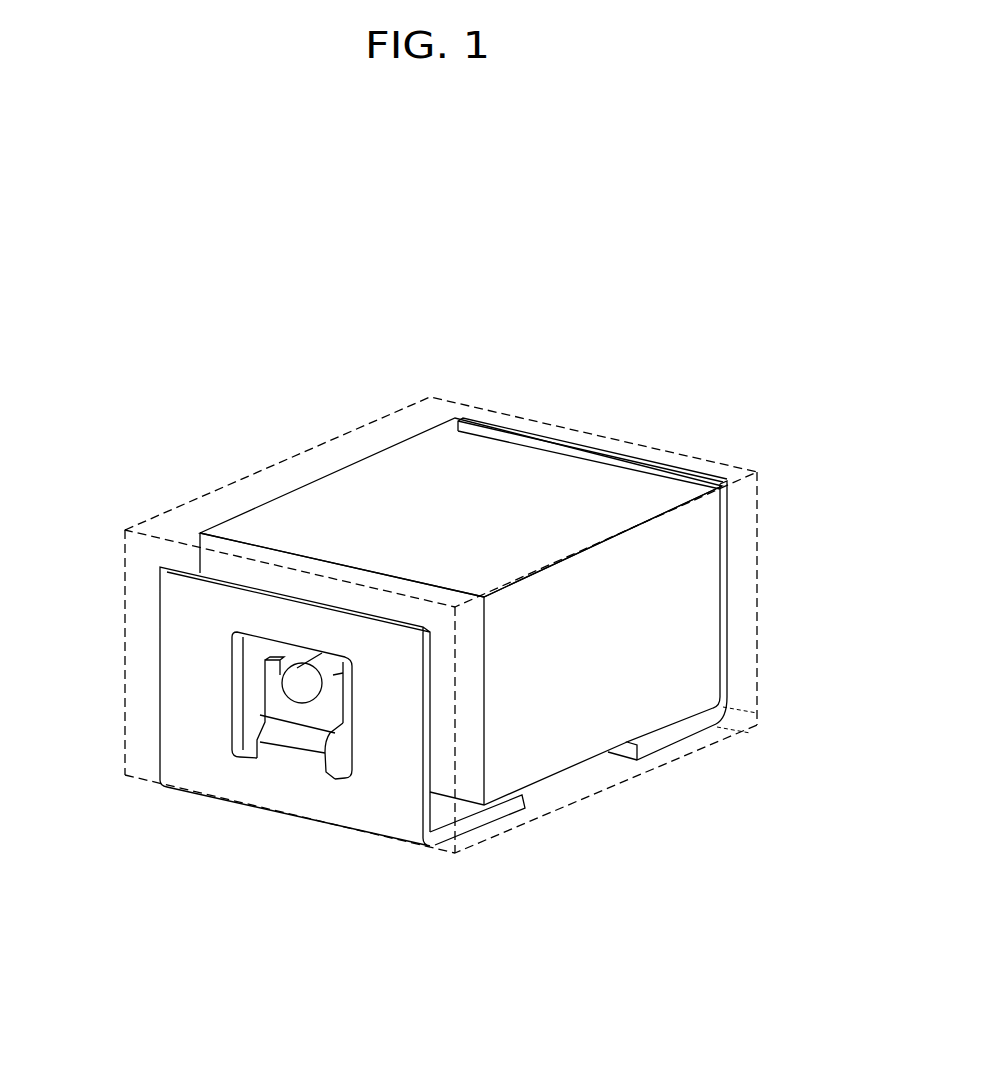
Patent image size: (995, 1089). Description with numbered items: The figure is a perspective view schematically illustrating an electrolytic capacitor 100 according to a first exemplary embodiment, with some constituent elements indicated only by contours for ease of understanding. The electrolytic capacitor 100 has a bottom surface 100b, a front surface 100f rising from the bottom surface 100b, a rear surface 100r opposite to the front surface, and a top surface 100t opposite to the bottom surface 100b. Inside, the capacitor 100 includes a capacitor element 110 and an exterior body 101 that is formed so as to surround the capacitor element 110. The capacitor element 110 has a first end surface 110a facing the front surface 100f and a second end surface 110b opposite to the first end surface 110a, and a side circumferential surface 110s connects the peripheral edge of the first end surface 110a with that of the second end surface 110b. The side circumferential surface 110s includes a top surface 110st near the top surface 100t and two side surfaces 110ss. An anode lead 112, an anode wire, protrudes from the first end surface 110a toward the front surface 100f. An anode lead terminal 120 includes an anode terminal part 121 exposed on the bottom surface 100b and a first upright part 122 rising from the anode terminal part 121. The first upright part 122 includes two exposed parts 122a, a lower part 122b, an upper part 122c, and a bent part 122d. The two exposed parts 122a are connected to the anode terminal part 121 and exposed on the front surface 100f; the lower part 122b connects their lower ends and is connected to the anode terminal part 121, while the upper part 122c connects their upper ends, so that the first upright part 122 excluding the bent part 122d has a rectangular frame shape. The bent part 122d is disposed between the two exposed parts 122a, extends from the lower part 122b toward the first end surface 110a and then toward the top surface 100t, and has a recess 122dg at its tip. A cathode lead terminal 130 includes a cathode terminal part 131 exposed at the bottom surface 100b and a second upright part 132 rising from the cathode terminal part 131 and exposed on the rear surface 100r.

The electrolytic capacitor 100 is at (140, 428).
The top surface 100t is at (280, 457).
The front surface 100f is at (136, 620).
The rear surface 100r is at (763, 585).
The bottom surface 100b is at (563, 818).
The capacitor element 110 is at (367, 480).
The side circumferential surface 110s is at (727, 386).
The top surface 110st is at (603, 506).
The side surfaces 110ss is at (684, 549).
The first end surface 110a is at (447, 835).
The second end surface 110b is at (729, 502).
The exterior body 101 is at (508, 420).
The anode lead 112 is at (300, 686).
The anode lead terminal 120 is at (462, 926).
The anode terminal part 121 is at (469, 739).
The first upright part 122 is at (430, 888).
The exposed parts 122a is at (393, 862).
The lower part 122b is at (243, 777).
The upper part 122c is at (317, 628).
The bent part 122d is at (285, 713).
The recess 122dg is at (265, 670).
The cathode lead terminal 130 is at (818, 680).
The cathode terminal part 131 is at (690, 738).
The second upright part 132 is at (728, 677).